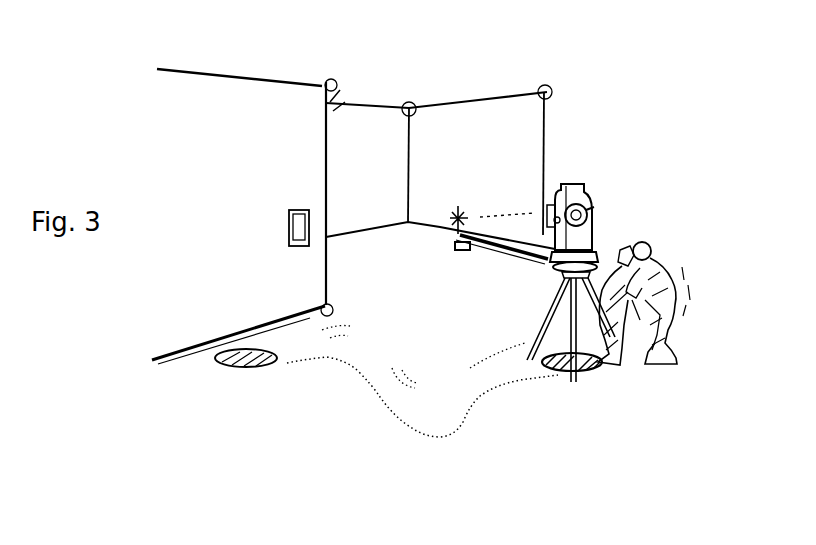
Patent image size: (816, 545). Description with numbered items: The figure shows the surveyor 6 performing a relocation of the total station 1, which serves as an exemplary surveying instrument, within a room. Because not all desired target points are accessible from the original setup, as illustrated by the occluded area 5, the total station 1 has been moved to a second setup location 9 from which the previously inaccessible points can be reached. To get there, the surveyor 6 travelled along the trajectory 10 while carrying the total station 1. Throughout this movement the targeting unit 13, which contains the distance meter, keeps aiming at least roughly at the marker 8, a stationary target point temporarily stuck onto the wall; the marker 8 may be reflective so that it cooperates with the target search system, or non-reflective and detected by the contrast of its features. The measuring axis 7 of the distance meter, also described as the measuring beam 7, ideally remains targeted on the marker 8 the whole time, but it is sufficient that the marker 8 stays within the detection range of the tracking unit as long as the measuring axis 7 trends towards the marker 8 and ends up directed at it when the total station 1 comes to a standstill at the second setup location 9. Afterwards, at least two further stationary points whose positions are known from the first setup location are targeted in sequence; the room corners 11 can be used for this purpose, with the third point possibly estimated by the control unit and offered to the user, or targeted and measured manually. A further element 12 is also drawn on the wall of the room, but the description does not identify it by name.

The total station 1 is at (591, 162).
The occluded area 5 is at (353, 218).
The surveyor 6 is at (656, 232).
The measuring axis 7 is at (507, 196).
The marker 8 is at (456, 199).
The second setup location 9 is at (596, 396).
The trajectory 10 is at (413, 460).
The room corners 11 is at (335, 70).
The wall box / outlet 12 is at (301, 193).
The targeting unit 13 is at (588, 213).